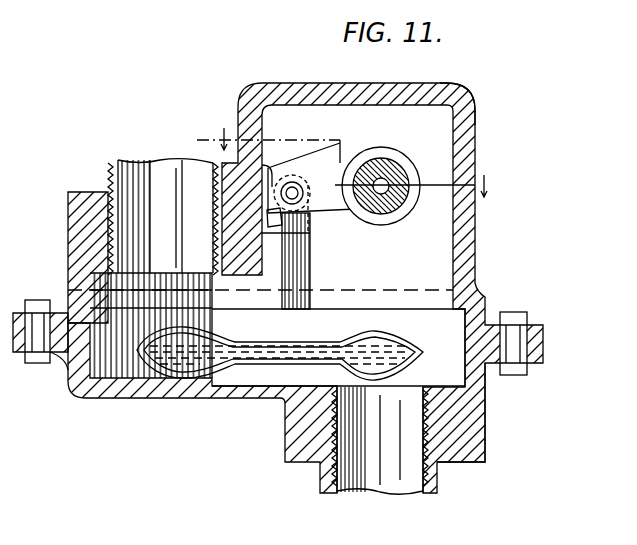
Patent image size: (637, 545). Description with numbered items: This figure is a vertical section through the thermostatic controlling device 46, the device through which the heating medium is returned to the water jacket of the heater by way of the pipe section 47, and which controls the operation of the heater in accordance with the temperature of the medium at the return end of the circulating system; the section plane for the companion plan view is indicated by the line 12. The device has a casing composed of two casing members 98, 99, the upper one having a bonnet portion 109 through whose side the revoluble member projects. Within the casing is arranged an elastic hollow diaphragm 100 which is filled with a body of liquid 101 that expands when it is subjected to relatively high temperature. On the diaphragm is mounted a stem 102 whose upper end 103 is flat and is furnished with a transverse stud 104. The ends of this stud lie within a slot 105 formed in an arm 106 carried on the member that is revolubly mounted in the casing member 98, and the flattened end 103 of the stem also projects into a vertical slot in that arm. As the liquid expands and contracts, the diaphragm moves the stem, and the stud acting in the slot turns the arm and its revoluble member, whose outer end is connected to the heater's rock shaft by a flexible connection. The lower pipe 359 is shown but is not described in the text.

The section line 12— 12 is at (348, 162).
The thermostatic controlling device 46 is at (85, 192).
The pipe section 47 is at (124, 160).
The casing member 98 is at (468, 235).
The casing member 99 is at (478, 413).
The elastic hollow diaphragm 100 is at (187, 398).
The body of liquid 101 is at (128, 398).
The stem 102 is at (298, 262).
The upper end of stem 103 is at (268, 170).
The transverse stud 104 is at (292, 190).
The slot 105 is at (333, 173).
The arm 106 is at (340, 180).
The bonnet portion 109 is at (473, 125).
The outlet pipe 359 is at (320, 475).